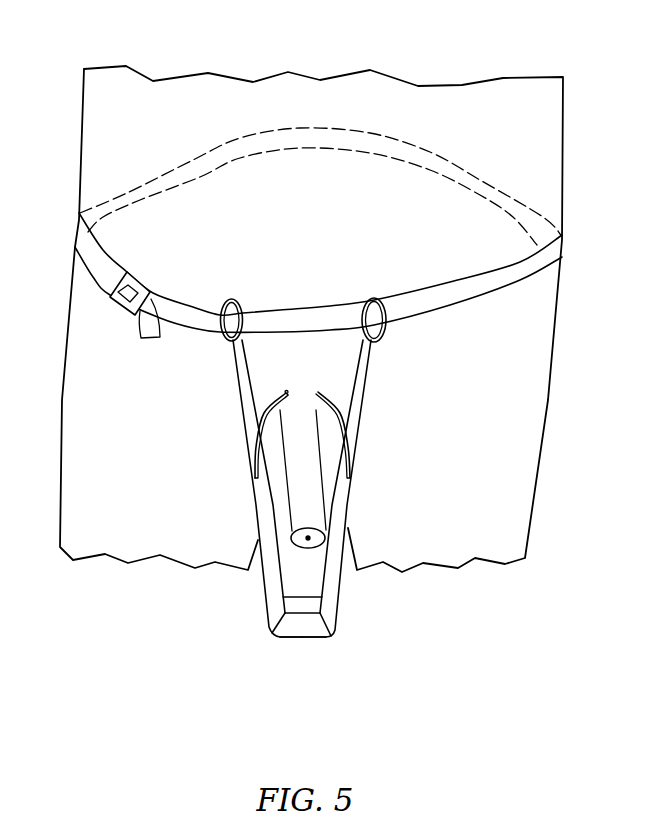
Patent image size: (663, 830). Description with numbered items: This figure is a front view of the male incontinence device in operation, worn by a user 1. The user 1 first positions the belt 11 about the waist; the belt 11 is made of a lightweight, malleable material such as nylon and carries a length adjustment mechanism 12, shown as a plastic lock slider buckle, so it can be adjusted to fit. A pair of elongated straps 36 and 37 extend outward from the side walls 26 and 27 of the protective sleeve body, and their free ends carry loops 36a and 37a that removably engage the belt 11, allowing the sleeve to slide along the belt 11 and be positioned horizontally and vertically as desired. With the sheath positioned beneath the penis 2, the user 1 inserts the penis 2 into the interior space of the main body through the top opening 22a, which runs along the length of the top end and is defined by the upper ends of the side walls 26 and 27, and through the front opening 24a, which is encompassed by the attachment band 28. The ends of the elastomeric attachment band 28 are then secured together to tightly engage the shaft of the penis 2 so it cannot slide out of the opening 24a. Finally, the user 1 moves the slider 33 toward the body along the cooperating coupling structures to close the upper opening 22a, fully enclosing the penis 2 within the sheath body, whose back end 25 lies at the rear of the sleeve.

The user 1 is at (333, 92).
The penis 2 is at (313, 490).
The belt 11 is at (562, 256).
The length adjustment mechanism 12 is at (120, 296).
The opening 22a is at (313, 568).
The opening 24a is at (302, 402).
The back end 25 is at (302, 633).
The side wall 26 is at (277, 617).
The side wall 27 is at (330, 615).
The attachment band 28 is at (253, 458).
The slider 33 is at (302, 598).
The elongated strap 36 is at (227, 356).
The loop 36a is at (236, 298).
The elongated strap 37 is at (365, 372).
The loop 37a is at (380, 298).